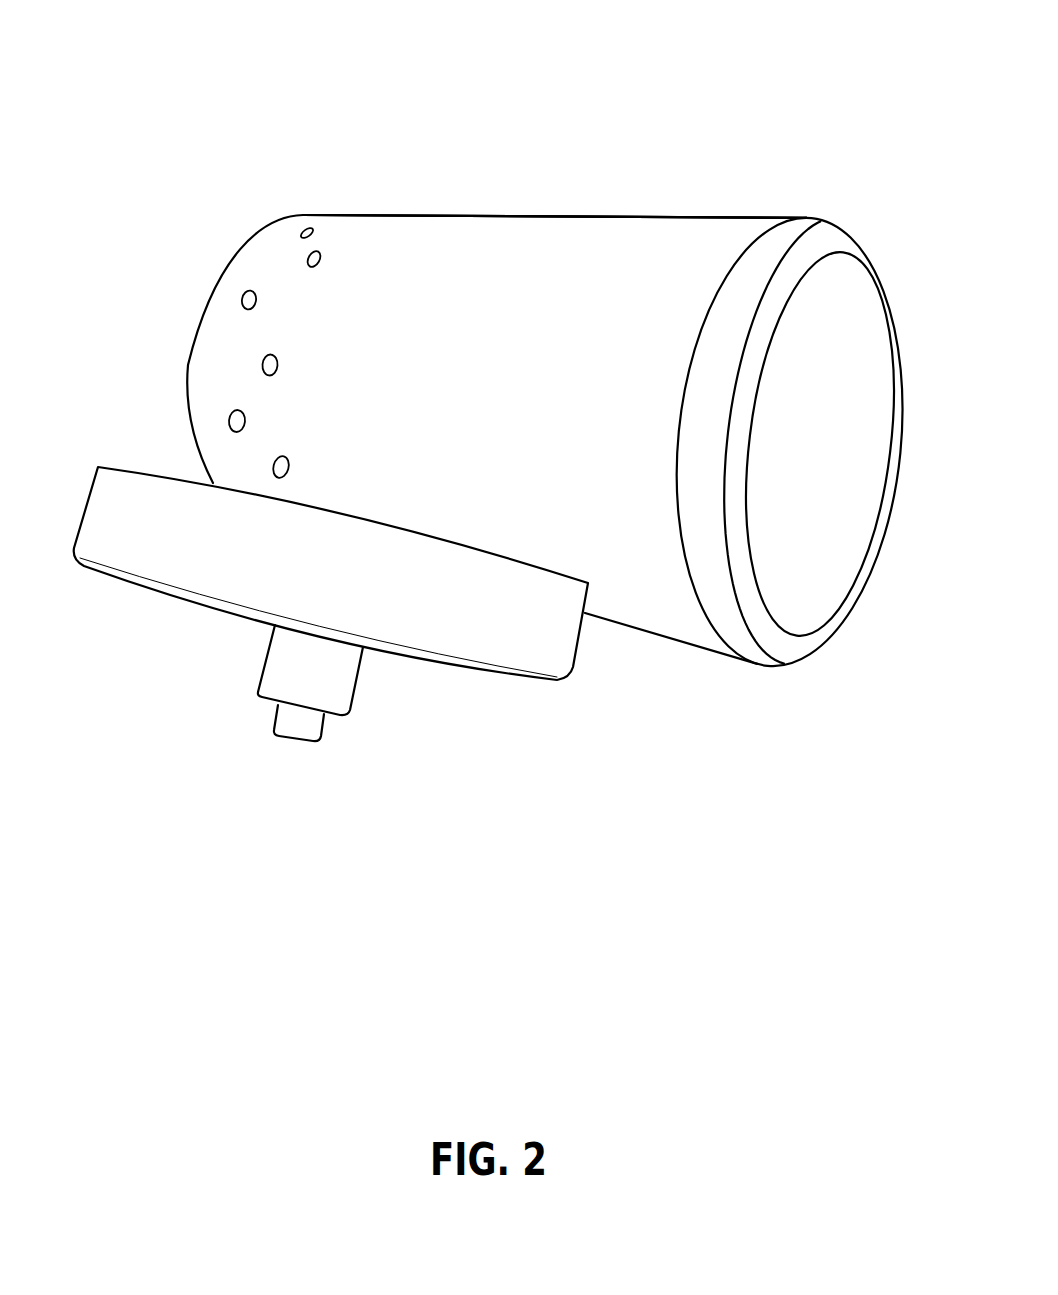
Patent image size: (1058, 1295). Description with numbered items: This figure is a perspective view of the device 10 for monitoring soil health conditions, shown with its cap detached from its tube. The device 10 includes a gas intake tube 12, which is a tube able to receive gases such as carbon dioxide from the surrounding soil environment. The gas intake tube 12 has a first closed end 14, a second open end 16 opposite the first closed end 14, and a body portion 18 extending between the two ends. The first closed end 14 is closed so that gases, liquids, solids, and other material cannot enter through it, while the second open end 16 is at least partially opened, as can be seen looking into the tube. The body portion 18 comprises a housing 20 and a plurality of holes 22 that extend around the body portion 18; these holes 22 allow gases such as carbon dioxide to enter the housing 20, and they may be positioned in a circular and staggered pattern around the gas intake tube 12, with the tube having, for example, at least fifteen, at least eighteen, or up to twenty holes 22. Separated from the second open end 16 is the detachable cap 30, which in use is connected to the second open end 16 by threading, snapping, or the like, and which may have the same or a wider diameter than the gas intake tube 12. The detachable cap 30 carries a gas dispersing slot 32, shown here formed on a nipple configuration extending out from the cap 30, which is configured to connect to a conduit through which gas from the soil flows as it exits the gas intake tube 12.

The device for monitoring soil health conditions 10 is at (798, 183).
The gas intake tube 12 is at (680, 212).
The first closed end 14 is at (202, 298).
The second open end 16 is at (877, 277).
The body portion 18 is at (488, 240).
The housing 20 is at (831, 429).
The holes 22 is at (317, 255).
The detachable cap 30 is at (140, 562).
The gas dispersing slot 32 is at (312, 730).